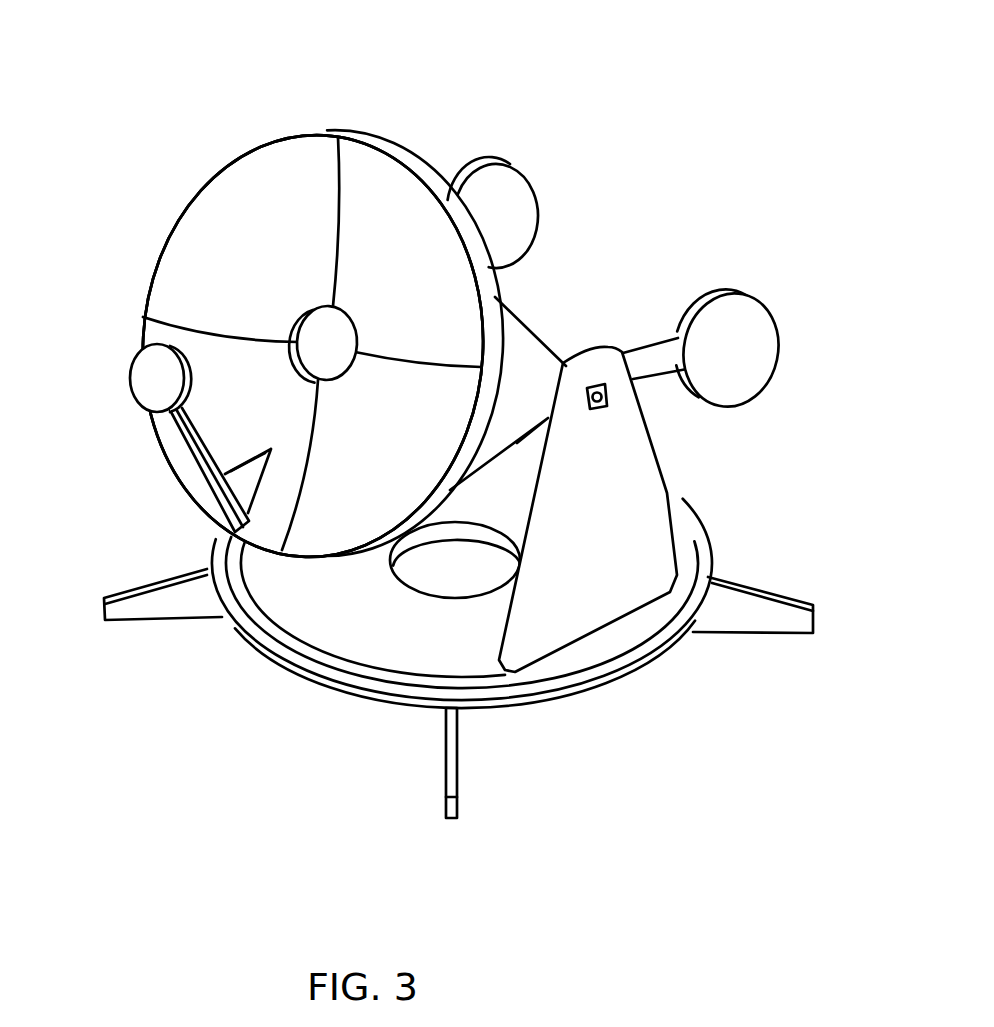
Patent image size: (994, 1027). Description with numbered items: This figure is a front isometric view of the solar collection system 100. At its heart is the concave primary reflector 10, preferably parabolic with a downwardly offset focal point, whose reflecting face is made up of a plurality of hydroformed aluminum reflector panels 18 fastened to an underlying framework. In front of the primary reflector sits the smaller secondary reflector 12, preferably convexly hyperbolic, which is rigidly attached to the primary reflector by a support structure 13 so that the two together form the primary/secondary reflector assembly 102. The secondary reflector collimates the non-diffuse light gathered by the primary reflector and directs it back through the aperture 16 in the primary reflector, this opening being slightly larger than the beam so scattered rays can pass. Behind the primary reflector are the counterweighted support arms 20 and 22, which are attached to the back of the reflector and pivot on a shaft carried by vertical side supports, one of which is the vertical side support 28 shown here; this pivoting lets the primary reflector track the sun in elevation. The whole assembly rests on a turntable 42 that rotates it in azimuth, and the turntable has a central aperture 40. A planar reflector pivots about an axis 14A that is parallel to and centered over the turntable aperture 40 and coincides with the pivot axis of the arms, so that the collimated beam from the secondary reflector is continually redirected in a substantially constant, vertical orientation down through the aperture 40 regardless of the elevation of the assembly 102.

The primary reflector 10 is at (249, 130).
The secondary reflector 12 is at (112, 356).
The support structure 13 is at (202, 452).
The pivoting axis 14A is at (604, 405).
The aperture 16 is at (328, 330).
The reflector panels 18 is at (213, 222).
The counterweighted support arm 20 is at (521, 169).
The counterweighted support arm 22 is at (738, 290).
The vertical side support 28 is at (684, 472).
The turntable aperture 40 is at (442, 563).
The turntable 42 is at (279, 658).
The solar collection system 100 is at (535, 72).
The primary/secondary reflector assembly 102 is at (113, 245).